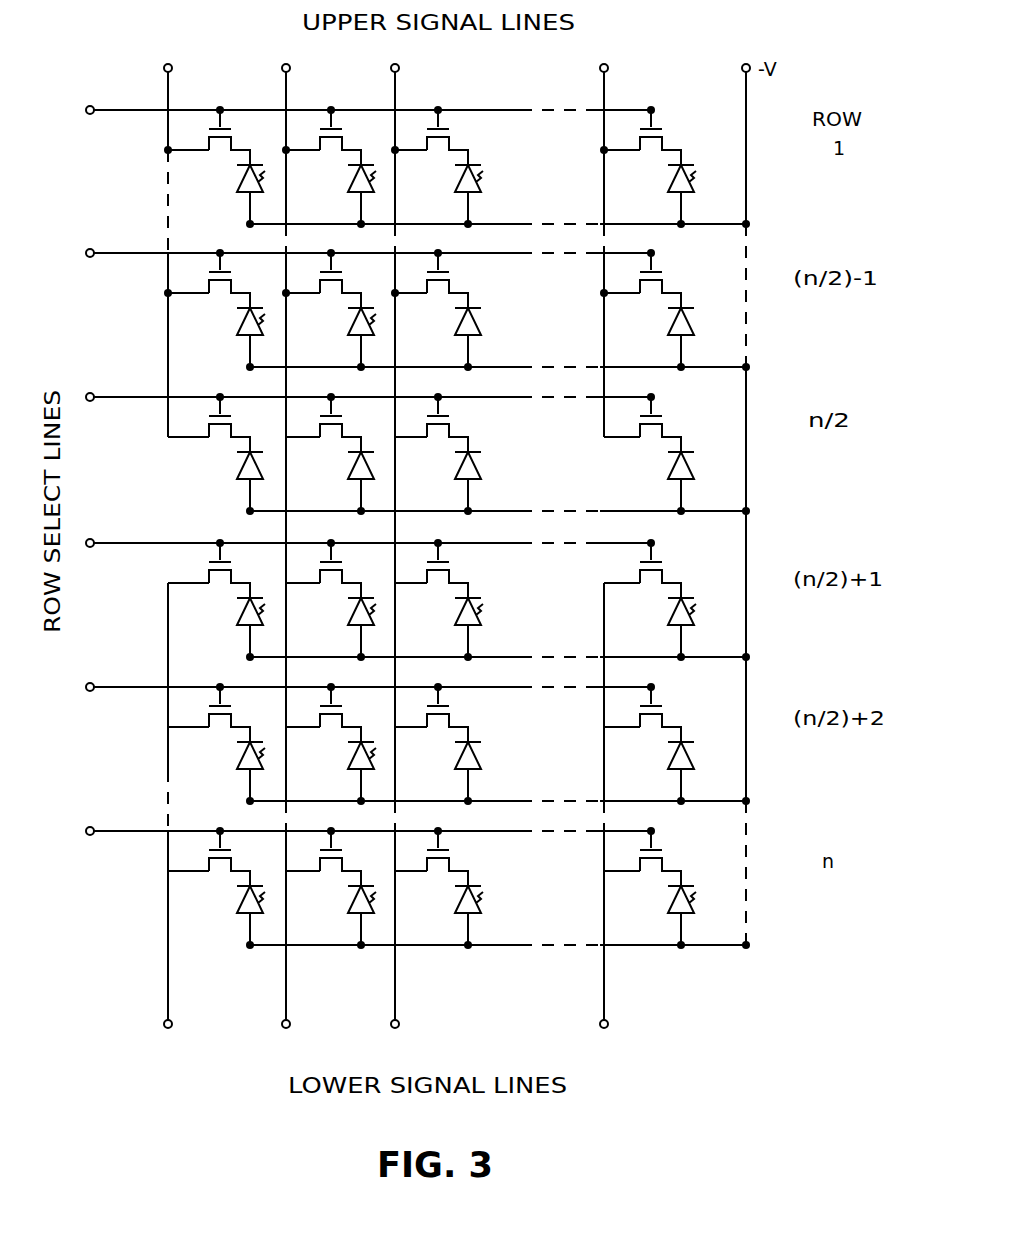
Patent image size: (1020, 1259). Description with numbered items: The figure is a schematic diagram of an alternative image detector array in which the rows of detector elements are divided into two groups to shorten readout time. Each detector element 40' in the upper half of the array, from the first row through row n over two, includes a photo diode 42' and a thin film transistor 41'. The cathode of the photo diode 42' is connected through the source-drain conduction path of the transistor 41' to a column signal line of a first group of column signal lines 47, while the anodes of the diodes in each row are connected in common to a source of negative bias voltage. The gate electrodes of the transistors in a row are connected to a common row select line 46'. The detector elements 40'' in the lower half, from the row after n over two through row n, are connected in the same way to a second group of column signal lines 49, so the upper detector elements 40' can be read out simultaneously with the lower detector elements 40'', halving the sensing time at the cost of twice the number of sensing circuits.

The first group of column signal lines 47 is at (172, 66).
The second group of column signal lines 49 is at (168, 978).
The row select line 46' is at (368, 422).
The thin film transistor 41' is at (185, 432).
The photo diode 42' is at (219, 483).
The detector element 40' is at (402, 310).
The detector element 40'' is at (397, 744).